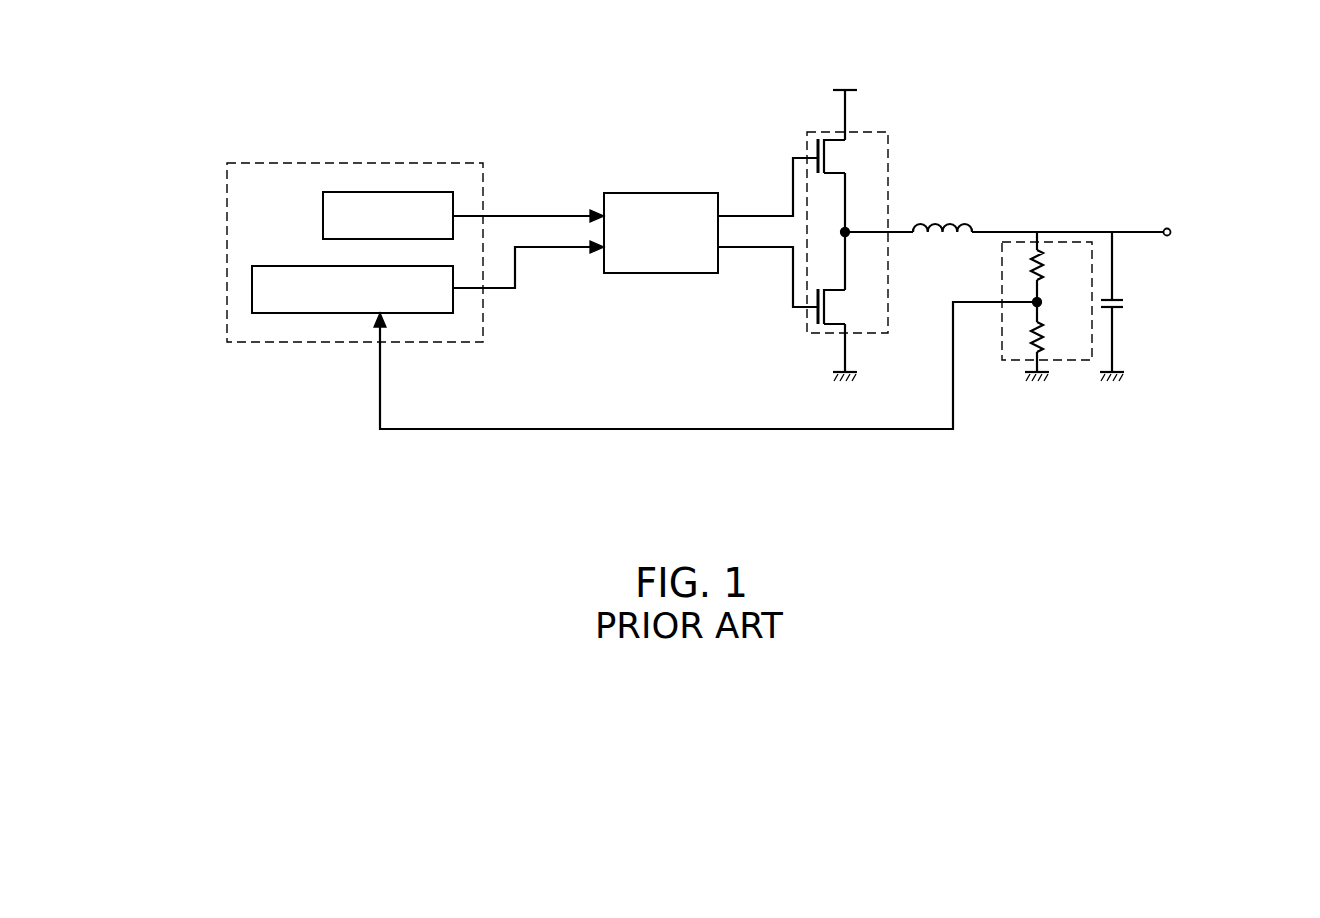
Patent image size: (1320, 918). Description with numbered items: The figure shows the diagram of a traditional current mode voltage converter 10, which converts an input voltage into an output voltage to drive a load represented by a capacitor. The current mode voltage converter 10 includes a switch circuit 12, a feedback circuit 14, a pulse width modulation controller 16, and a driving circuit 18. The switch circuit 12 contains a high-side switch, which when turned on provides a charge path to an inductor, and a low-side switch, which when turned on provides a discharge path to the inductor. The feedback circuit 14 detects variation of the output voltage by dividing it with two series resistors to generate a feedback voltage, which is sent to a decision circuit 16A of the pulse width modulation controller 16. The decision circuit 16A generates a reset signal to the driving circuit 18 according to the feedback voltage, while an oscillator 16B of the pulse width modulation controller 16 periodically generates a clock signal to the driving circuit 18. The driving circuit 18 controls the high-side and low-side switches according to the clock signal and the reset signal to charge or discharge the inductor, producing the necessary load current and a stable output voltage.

The current mode voltage converter 10 is at (240, 42).
The switch circuit 12 is at (888, 148).
The feedback circuit 14 is at (1078, 362).
The pulse width modulation (PWM) controller 16 is at (381, 163).
The decision circuit 16A is at (252, 288).
The oscillator 16B is at (323, 216).
The driving circuit 18 is at (661, 193).